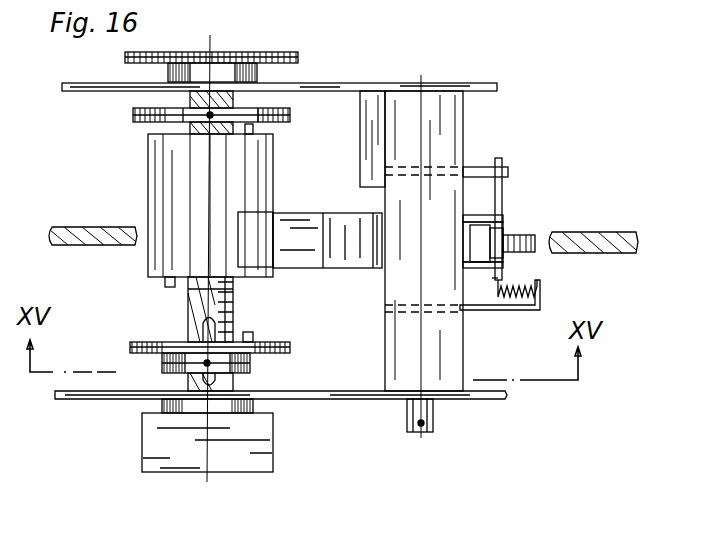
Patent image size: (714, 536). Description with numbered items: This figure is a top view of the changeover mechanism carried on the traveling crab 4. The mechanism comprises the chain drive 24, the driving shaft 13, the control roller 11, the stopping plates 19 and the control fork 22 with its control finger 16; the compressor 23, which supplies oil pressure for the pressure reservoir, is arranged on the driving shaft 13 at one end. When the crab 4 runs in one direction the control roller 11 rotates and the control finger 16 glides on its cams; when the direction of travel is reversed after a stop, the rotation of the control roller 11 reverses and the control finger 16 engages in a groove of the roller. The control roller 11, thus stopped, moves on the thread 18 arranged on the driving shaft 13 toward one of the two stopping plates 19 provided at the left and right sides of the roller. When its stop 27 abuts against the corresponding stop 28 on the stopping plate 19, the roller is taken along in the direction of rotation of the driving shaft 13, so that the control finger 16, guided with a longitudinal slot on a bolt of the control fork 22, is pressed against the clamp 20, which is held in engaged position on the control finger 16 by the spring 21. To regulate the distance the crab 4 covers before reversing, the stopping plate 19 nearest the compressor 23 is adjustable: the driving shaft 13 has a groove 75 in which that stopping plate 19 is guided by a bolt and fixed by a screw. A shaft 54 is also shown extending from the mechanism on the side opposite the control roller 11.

The traveling crab 4 is at (455, 88).
The control roller 11 is at (170, 152).
The driving shaft 13 is at (192, 311).
The control finger 16 is at (313, 267).
The thread 18 is at (198, 293).
The stopping plate 19 is at (133, 115).
The clamp 20 is at (520, 237).
The spring 21 is at (512, 292).
The control fork 22 is at (453, 137).
The compressor 23 is at (255, 450).
The chain drive 24 is at (293, 50).
The stop 27 is at (167, 282).
The stop 28 is at (253, 335).
The shaft 54 is at (612, 233).
The groove 75 is at (215, 320).